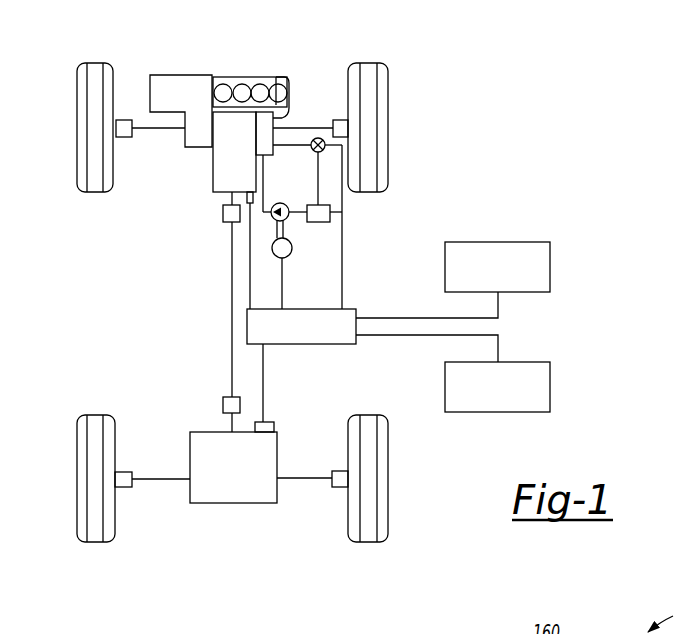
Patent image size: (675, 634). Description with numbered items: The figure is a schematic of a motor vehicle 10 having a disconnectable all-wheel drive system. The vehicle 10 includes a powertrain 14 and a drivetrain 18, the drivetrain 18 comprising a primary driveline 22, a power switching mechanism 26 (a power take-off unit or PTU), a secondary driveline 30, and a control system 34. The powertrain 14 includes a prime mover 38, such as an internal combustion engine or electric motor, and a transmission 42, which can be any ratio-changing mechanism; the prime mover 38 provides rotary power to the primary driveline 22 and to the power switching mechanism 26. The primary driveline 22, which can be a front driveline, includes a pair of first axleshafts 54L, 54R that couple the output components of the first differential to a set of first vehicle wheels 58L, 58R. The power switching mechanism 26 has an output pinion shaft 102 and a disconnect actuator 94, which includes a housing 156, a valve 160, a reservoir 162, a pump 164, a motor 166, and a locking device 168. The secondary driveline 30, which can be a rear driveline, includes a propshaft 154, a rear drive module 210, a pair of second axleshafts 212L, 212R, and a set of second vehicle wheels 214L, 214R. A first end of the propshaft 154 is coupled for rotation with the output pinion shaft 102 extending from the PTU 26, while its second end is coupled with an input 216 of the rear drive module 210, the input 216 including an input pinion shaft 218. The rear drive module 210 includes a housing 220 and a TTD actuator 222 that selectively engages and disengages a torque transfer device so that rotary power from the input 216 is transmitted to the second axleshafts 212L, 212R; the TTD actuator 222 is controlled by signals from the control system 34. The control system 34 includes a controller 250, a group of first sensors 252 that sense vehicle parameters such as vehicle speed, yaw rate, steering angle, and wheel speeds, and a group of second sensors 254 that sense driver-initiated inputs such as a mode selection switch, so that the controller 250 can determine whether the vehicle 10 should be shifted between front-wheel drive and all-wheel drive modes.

The motor vehicle 10 is at (80, 243).
The powertrain 14 is at (233, 74).
The drivetrain 18 is at (97, 358).
The primary driveline 22 is at (179, 137).
The power switching mechanism 26 is at (207, 180).
The secondary driveline 30 is at (193, 530).
The control system 34 is at (510, 327).
The prime mover 38 is at (270, 76).
The transmission 42 is at (183, 75).
The first axleshaft 54L is at (148, 128).
The first axleshaft 54R is at (308, 128).
The first vehicle wheel 58L is at (97, 63).
The first vehicle wheel 58R is at (366, 63).
The disconnect actuator 94 is at (302, 230).
The output pinion shaft 102 is at (227, 203).
The propshaft 154 is at (232, 307).
The housing 156 is at (282, 79).
The valve 160 is at (325, 141).
The reservoir 162 is at (330, 212).
The pump 164 is at (289, 207).
The motor 166 is at (285, 258).
The locking device 168 is at (246, 193).
The rear drive module 210 is at (246, 496).
The second axleshaft 212L is at (160, 480).
The second axleshaft 212R is at (300, 480).
The second vehicle wheel 214L is at (92, 542).
The second vehicle wheel 214R is at (363, 542).
The input 216 is at (231, 427).
The input pinion shaft 218 is at (229, 423).
The housing 220 is at (223, 503).
The TTD actuator 222 is at (283, 425).
The controller 250 is at (322, 344).
The first sensors 252 is at (550, 385).
The second sensors 254 is at (550, 265).